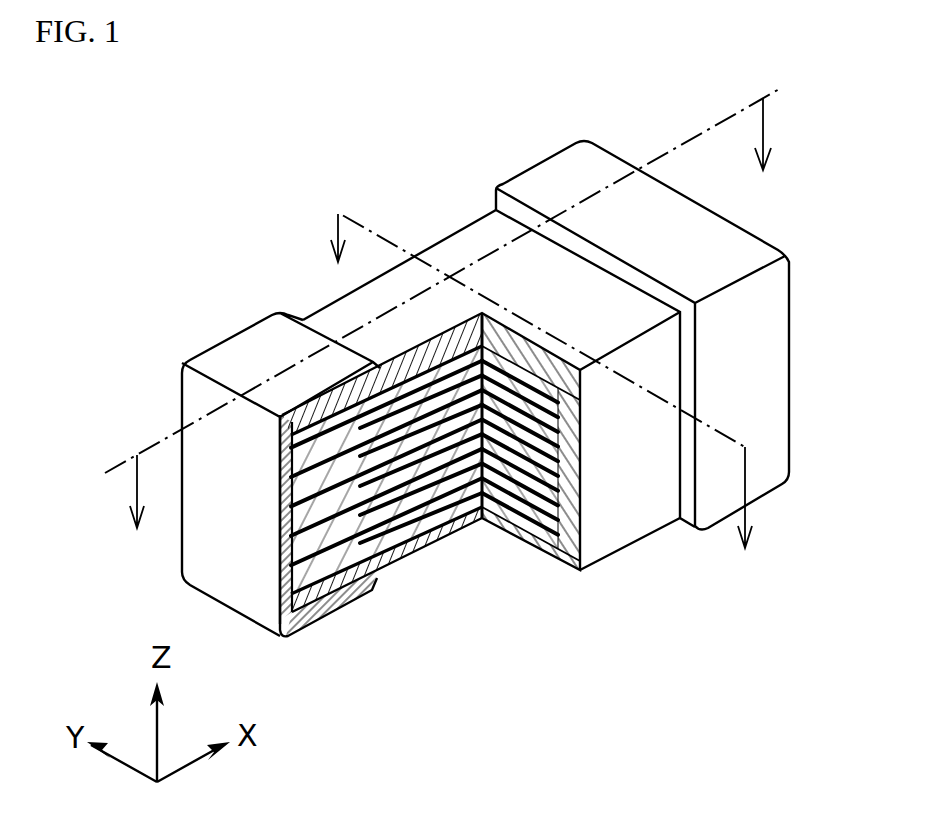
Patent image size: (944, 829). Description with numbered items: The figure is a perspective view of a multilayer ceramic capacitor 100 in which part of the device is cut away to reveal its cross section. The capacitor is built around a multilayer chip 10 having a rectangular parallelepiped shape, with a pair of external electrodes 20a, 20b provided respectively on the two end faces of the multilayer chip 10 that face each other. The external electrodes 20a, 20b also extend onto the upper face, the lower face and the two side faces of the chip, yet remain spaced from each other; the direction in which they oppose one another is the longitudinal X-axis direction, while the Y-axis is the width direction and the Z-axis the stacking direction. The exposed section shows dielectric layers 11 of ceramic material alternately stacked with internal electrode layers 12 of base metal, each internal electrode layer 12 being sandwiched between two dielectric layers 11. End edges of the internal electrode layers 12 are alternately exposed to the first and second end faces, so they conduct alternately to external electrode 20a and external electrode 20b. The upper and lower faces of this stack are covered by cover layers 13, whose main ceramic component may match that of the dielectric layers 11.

The multilayer ceramic capacitor 100 is at (892, 70).
The multilayer chip 10 is at (315, 291).
The dielectric layer 11 is at (413, 503).
The internal electrode layer 12 is at (382, 538).
The cover layer 13 is at (455, 251).
The external electrode 20a is at (207, 347).
The external electrode 20b is at (541, 178).